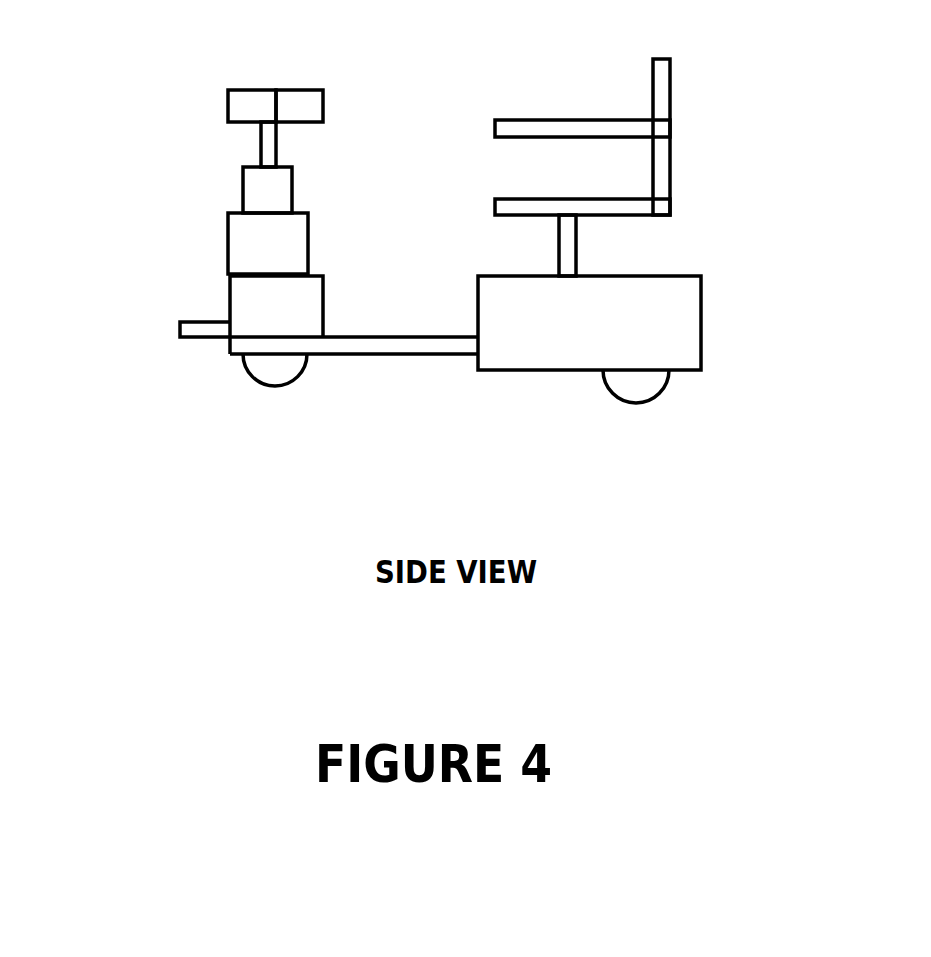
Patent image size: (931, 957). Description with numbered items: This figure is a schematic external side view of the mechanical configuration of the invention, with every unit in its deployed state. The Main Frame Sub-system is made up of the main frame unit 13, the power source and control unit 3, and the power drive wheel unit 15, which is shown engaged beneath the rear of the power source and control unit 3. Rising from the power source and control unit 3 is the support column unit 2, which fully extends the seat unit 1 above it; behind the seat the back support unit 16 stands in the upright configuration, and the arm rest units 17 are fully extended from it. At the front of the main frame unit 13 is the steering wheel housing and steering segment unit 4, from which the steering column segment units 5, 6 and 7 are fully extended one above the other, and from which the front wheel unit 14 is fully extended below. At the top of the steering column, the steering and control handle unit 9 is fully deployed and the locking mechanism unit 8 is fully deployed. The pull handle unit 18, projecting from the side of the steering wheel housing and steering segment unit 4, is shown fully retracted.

The seat unit 1 is at (527, 198).
The support column unit 2 is at (577, 248).
The power source and control unit 3 is at (547, 277).
The steering wheel housing and steering segment unit 4 is at (244, 321).
The steering column segment unit 5 is at (244, 243).
The steering column segment unit 6 is at (243, 200).
The steering column segment unit 7 is at (258, 150).
The locking mechanism unit 8 is at (245, 105).
The steering and control handle unit 9 is at (305, 107).
The main frame unit 13 is at (385, 354).
The front wheel unit 14 is at (270, 385).
The power drive wheel unit 15 is at (662, 387).
The back support unit 16 is at (672, 170).
The arm rest unit 17 is at (533, 120).
The pull handle unit 18 is at (196, 335).